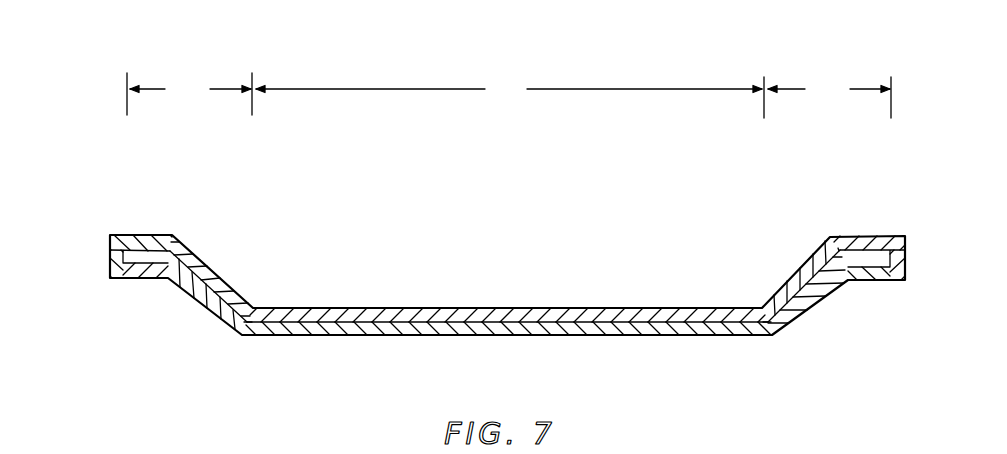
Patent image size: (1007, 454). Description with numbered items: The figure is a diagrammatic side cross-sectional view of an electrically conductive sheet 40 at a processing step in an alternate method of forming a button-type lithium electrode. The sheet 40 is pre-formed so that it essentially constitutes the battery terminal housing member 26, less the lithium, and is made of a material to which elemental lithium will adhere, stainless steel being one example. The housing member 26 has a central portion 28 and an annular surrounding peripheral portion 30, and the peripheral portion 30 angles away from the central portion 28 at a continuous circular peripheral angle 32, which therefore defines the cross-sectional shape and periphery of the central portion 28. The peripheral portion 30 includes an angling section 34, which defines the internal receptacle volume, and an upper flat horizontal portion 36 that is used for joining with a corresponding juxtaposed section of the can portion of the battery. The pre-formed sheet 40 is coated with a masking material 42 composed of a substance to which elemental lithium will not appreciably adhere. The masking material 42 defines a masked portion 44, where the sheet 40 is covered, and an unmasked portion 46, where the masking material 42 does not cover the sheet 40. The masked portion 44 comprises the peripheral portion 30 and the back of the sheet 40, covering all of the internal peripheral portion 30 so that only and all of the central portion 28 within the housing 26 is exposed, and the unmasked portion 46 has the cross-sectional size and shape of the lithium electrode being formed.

The battery terminal housing member 26 is at (697, 50).
The central portion 28 is at (365, 308).
The peripheral portion 30 is at (509, 95).
The peripheral angle 32 is at (258, 303).
The angling section 34 is at (197, 302).
The upper flat horizontal portion 36 is at (138, 279).
The electrically conductive sheet 40 is at (616, 308).
The masking material 42 is at (148, 236).
The masked portion 44 is at (160, 236).
The unmasked portion 46 is at (481, 306).